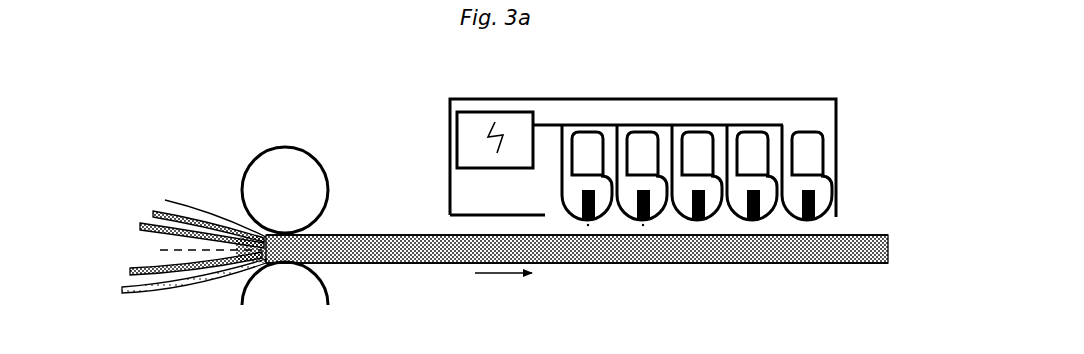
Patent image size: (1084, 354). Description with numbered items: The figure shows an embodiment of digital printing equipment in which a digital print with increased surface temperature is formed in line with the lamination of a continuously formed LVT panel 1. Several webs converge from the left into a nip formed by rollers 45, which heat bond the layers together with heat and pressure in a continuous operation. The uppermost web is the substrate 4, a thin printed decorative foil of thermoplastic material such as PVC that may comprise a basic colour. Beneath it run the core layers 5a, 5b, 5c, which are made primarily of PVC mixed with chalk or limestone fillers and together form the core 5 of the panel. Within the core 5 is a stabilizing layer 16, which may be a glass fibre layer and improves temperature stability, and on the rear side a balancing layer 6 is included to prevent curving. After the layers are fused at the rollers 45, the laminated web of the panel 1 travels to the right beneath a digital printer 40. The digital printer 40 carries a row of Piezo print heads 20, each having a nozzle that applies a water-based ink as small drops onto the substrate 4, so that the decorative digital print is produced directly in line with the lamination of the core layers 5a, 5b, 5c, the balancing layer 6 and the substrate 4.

The LVT panel 1 is at (400, 233).
The substrate 4 is at (166, 198).
The core 5 is at (601, 264).
The core layer 5a is at (153, 212).
The core layer 5b is at (140, 226).
The core layer 5c is at (130, 271).
The balancing layer 6 is at (122, 292).
The stabilizing layer 16 is at (158, 250).
The Piezo print head 20 is at (813, 207).
The digital printer 40 is at (433, 97).
The roller 45 is at (306, 166).